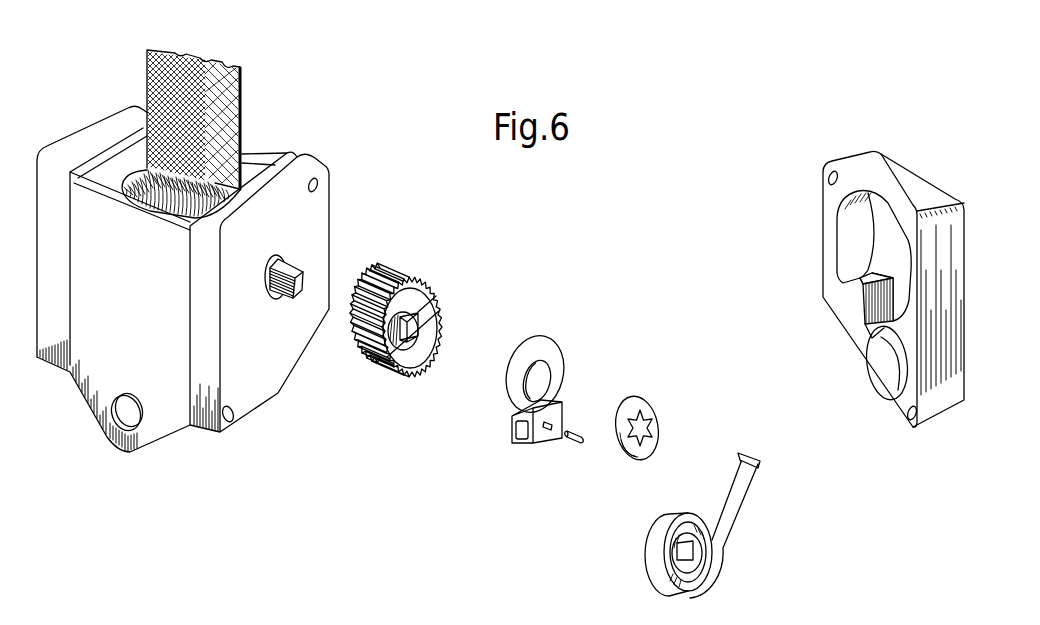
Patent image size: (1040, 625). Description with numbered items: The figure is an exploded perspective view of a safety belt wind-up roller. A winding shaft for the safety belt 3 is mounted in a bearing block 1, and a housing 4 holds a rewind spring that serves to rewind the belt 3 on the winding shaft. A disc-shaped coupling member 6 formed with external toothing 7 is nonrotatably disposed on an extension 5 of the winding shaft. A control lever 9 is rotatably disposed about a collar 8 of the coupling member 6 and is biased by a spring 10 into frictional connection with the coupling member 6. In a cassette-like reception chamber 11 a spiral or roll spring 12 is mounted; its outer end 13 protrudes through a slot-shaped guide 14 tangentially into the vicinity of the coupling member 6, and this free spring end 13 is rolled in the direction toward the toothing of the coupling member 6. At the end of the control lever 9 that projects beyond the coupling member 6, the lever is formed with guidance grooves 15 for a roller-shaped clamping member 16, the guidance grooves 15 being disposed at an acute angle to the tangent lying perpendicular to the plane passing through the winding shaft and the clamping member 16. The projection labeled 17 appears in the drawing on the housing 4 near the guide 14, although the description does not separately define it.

The bearing block 1 is at (80, 145).
The safety belt 3 is at (245, 106).
The housing 4 is at (893, 289).
The extension of the winding shaft 5 is at (305, 275).
The coupling member 6 is at (409, 305).
The external toothing 7 is at (398, 266).
The collar 8 is at (418, 312).
The control lever 9 is at (557, 360).
The spring 10 is at (653, 400).
The reception chamber 11 is at (890, 383).
The spiral spring 12 is at (662, 525).
The outer end of the spiral spring 13 is at (753, 481).
The slot-shaped guide 14 is at (870, 333).
The guidance grooves 15 is at (550, 441).
The clamping member 16 is at (578, 428).
The projection 17 is at (858, 290).